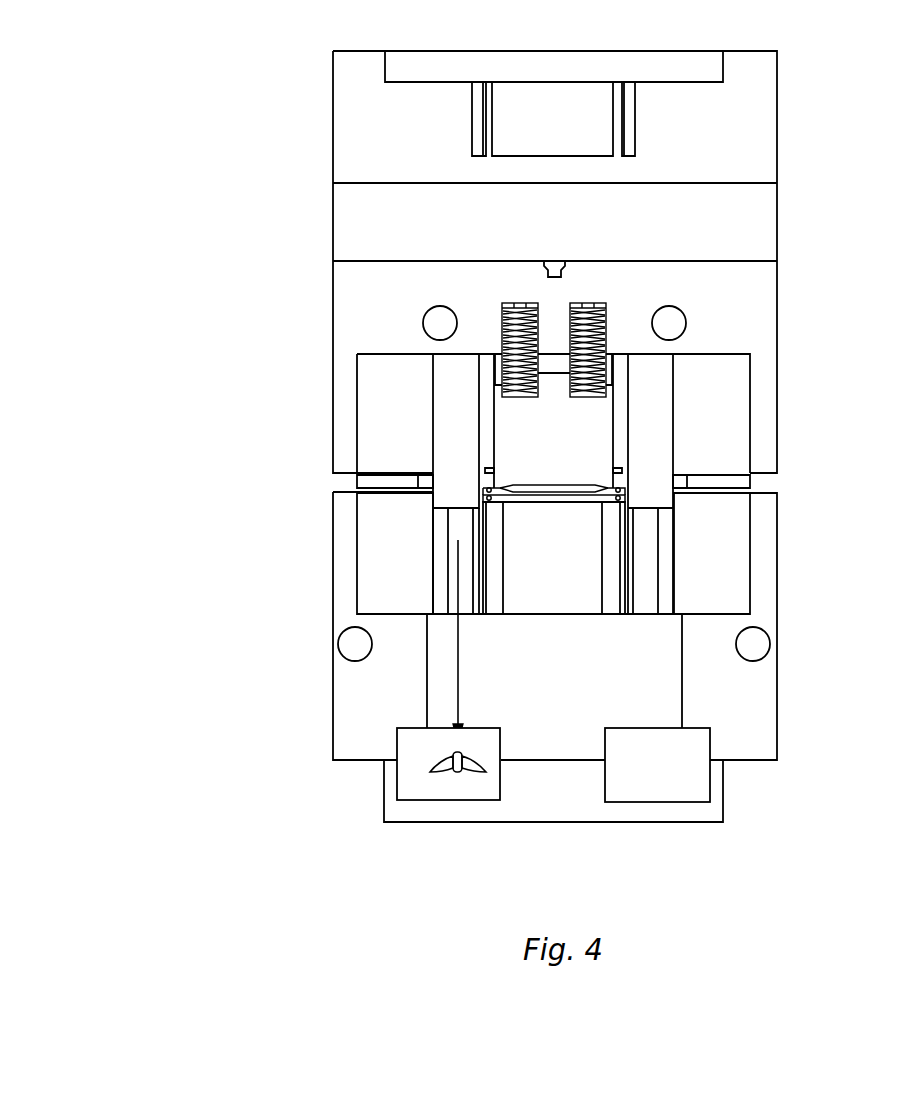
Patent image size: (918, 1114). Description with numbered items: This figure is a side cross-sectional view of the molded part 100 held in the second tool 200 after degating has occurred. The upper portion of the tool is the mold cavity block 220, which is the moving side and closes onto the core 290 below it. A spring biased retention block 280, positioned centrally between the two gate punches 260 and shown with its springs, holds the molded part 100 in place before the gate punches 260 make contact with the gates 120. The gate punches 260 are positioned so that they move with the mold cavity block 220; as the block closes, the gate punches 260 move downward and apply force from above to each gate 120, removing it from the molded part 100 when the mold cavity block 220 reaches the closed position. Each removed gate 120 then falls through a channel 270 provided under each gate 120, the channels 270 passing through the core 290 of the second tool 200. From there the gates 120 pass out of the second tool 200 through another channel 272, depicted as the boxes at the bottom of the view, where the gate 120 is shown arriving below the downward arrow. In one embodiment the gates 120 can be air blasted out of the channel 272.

The second tool 200 is at (265, 72).
The mold cavity block 220 is at (368, 432).
The gate punch 260 is at (447, 434).
The spring biased retention block 280 is at (503, 406).
The molded part 100 is at (622, 490).
The channel 270 is at (453, 527).
The core 290 is at (387, 578).
The channel 272 is at (420, 763).
The gate 120 is at (459, 772).